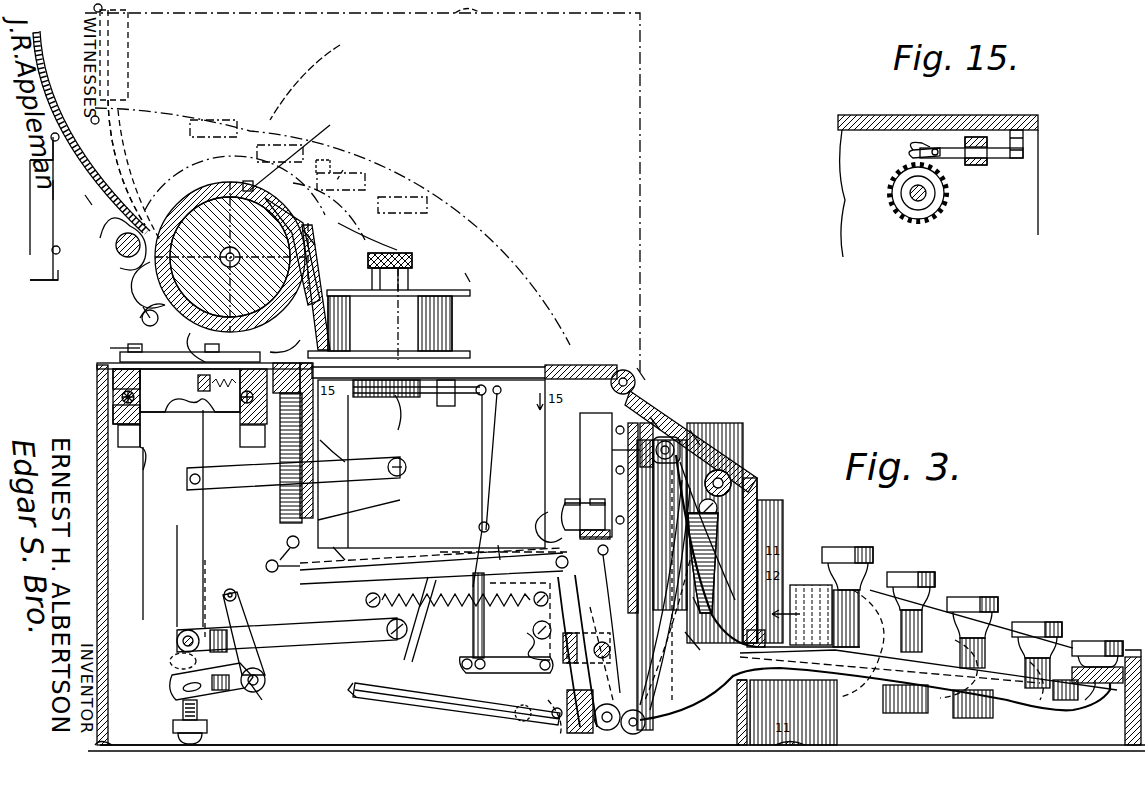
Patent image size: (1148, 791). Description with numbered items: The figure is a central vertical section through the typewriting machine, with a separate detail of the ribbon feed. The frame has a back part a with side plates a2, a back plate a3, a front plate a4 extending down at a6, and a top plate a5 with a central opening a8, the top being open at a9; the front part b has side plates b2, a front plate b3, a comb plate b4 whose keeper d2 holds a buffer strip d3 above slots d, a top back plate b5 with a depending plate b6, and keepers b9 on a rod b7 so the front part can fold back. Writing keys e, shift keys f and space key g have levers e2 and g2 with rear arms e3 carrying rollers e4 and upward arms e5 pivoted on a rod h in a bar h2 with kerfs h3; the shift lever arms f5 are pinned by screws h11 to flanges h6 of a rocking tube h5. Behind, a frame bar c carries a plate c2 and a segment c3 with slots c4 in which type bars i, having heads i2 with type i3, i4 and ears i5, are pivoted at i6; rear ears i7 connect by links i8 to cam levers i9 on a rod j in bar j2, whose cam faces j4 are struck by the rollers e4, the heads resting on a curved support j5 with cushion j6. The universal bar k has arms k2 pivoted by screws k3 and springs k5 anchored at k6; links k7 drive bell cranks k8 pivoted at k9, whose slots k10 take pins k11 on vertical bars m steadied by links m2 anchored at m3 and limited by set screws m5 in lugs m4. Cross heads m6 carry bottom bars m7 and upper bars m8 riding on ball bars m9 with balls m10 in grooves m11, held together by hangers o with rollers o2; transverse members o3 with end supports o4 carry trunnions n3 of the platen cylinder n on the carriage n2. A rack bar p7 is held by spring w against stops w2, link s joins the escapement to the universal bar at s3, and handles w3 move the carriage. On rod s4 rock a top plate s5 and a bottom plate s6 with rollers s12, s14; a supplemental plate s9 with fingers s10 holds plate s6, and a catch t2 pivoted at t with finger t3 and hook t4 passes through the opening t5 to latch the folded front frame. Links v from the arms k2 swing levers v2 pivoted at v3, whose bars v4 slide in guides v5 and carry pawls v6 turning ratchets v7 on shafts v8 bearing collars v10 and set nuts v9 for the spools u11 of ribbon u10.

In FIG. 3, the plate with opening t5 is at (63, 99).
In FIG. 3, the pivot of catch t is at (52, 136).
In FIG. 3, the finger of catch t3 is at (40, 160).
In FIG. 3, the catch t2 is at (53, 190).
In FIG. 3, the right-angled hook t4 is at (48, 262).
In FIG. 3, the supplemental plate s9 is at (88, 198).
In FIG. 3, the top rock plate s5 is at (102, 145).
In FIG. 3, the transverse rod s4 is at (116, 250).
In FIG. 3, the roller s12 is at (135, 298).
In FIG. 3, the curved fingers s10 is at (150, 312).
In FIG. 3, the bottom rock plate s6 is at (283, 203).
In FIG. 3, the smaller roller s14 is at (352, 213).
In FIG. 3, the link s is at (404, 700).
In FIG. 3, the connection of link to universal bar s3 is at (527, 718).
In FIG. 3, the platen cylinder n is at (190, 207).
In FIG. 3, the carriage n2 is at (160, 208).
In FIG. 3, the trunnions n3 is at (235, 184).
In FIG. 3, the spiral spring w is at (220, 394).
In FIG. 3, the stops w2 is at (213, 360).
In FIG. 3, the handles w3 is at (332, 72).
In FIG. 3, the vertically movable bars m is at (180, 563).
In FIG. 3, the link members m2 is at (255, 482).
In FIG. 3, the anchor points m3 is at (407, 470).
In FIG. 3, the lugs m4 is at (173, 727).
In FIG. 3, the set screws m5 is at (207, 736).
In FIG. 3, the cross heads m6 is at (185, 401).
In FIG. 3, the transverse bars m7 is at (141, 426).
In FIG. 3, the upper bars m8 is at (100, 368).
In FIG. 3, the ball bearing bars m9 is at (121, 397).
In FIG. 3, the anti-friction balls m10 is at (127, 403).
In FIG. 3, the grooves m11 is at (125, 385).
In FIG. 3, the hangers o is at (107, 426).
In FIG. 3, the rollers o2 is at (129, 450).
In FIG. 3, the transverse frame members o3 is at (118, 349).
In FIG. 3, the raised end supports o4 is at (143, 307).
In FIG. 3, the escapement rack bar p7 is at (200, 379).
In FIG. 3, the transverse frame bar c is at (296, 364).
In FIG. 3, the transverse plate c2 is at (336, 455).
In FIG. 3, the segment c3 is at (279, 522).
In FIG. 3, the kerfs or slots c4 is at (322, 520).
In FIG. 3, the links v is at (520, 645).
In FIG. 3, the vertically arranged levers v2 is at (478, 487).
In FIG. 15, the vertically arranged levers v2 is at (1023, 140).
In FIG. 3, the pivot of levers v3 is at (474, 527).
In FIG. 3, the pivoted bars v4 is at (486, 378).
In FIG. 15, the pivoted bars v4 is at (1003, 160).
In FIG. 3, the guides v5 is at (446, 407).
In FIG. 15, the guides v5 is at (976, 166).
In FIG. 15, the spring-operated pawls v6 is at (915, 150).
In FIG. 3, the ratchets v7 is at (400, 397).
In FIG. 15, the ratchets v7 is at (915, 222).
In FIG. 3, the shafts v8 is at (401, 253).
In FIG. 15, the shafts v8 is at (912, 190).
In FIG. 3, the set nuts v9 is at (417, 249).
In FIG. 3, the collars v10 is at (379, 350).
In FIG. 3, the ribbon u10 is at (303, 230).
In FIG. 3, the spools u11 is at (471, 278).
In FIG. 3, the writing keys e is at (343, 170).
In FIG. 3, the key levers e2 is at (932, 673).
In FIG. 3, the downwardly and backwardly directed arms e3 is at (657, 700).
In FIG. 3, the grooved anti-friction rollers e4 is at (655, 727).
In FIG. 3, the upwardly directed arms e5 is at (693, 597).
In FIG. 3, the back part of frame a is at (420, 727).
In FIG. 15, the side plates a2 is at (1030, 114).
In FIG. 3, the back plate a3 is at (108, 560).
In FIG. 3, the front plate a4 is at (633, 493).
In FIG. 3, the top plate a5 is at (580, 362).
In FIG. 3, the lower extension of front plate a6 is at (685, 632).
In FIG. 3, the central opening a8 is at (477, 362).
In FIG. 3, the open top a9 is at (160, 540).
In FIG. 3, the front part of frame b is at (998, 626).
In FIG. 3, the side plates of front frame b2 is at (800, 560).
In FIG. 3, the front plate b3 is at (1132, 650).
In FIG. 3, the comb plate b4 is at (745, 725).
In FIG. 3, the top back plate b5 is at (700, 430).
In FIG. 3, the front downwardly directed plate b6 is at (757, 533).
In FIG. 3, the transverse rod b7 is at (648, 392).
In FIG. 3, the shorter keepers b9 is at (637, 368).
In FIG. 3, the transverse rod h is at (672, 438).
In FIG. 3, the transverse bar h2 is at (640, 450).
In FIG. 3, the kerfs h3 is at (650, 417).
In FIG. 3, the transverse tube h5 is at (755, 468).
In FIG. 3, the depending end flanges h6 is at (707, 473).
In FIG. 3, the screws or pins h11 is at (745, 460).
In FIG. 3, the type bars i is at (499, 546).
In FIG. 3, the heads i2 is at (592, 508).
In FIG. 3, the large type i3 is at (600, 500).
In FIG. 3, the small type i4 is at (567, 523).
In FIG. 3, the upwardly directed ears i5 is at (334, 548).
In FIG. 3, the pivot i6 is at (287, 539).
In FIG. 3, the downwardly and backwardly directed ears i7 is at (266, 567).
In FIG. 3, the links i8 is at (407, 560).
In FIG. 3, the cam levers i9 is at (602, 642).
In FIG. 3, the transverse rod j is at (688, 655).
In FIG. 3, the transverse bar j2 is at (603, 575).
In FIG. 3, the cam faces j4 is at (665, 677).
In FIG. 3, the segmentally curved support j5 is at (580, 427).
In FIG. 3, the cushion strip j6 is at (560, 538).
In FIG. 3, the universal bar k is at (620, 668).
In FIG. 3, the arms k2 is at (565, 680).
In FIG. 3, the screws k3 is at (533, 629).
In FIG. 3, the tension springs k5 is at (438, 607).
In FIG. 3, the spring anchor points k6 is at (366, 603).
In FIG. 3, the links k7 is at (417, 653).
In FIG. 3, the bell crank levers k8 is at (266, 679).
In FIG. 3, the pivot of bell cranks k9 is at (265, 692).
In FIG. 3, the slots k10 is at (172, 688).
In FIG. 3, the pins k11 is at (170, 700).
In FIG. 3, the shift keys f is at (1093, 641).
In FIG. 3, the upwardly directed arms of shift key levers f5 is at (703, 540).
In FIG. 3, the space key g is at (1113, 687).
In FIG. 3, the space key levers g2 is at (1074, 712).
In FIG. 3, the vertical slots d is at (745, 697).
In FIG. 3, the transverse keeper d2 is at (763, 612).
In FIG. 3, the buffer strip d3 is at (766, 646).